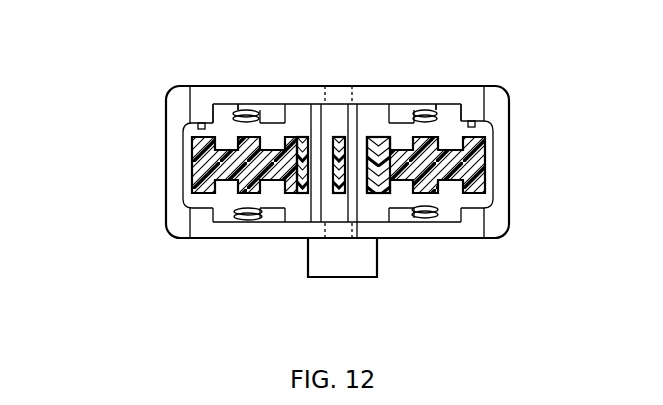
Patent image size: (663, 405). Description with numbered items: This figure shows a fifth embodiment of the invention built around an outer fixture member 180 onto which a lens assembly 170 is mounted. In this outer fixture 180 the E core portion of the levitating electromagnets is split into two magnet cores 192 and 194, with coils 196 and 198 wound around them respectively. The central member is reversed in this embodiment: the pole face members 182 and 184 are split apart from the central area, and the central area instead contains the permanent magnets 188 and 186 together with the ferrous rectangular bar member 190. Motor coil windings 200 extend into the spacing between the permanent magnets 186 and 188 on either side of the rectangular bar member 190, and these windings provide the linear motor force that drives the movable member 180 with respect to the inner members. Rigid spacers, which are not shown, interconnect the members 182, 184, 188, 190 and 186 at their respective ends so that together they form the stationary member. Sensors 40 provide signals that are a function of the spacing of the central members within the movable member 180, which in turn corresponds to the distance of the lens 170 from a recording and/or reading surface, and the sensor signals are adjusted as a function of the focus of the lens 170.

The outer fixture member 180 is at (136, 90).
The lens assembly 170 is at (358, 268).
The sensors 40 is at (197, 126).
The pole face member 182 is at (199, 157).
The pole face member 184 is at (434, 222).
The permanent magnet 186 is at (311, 104).
The permanent magnet 188 is at (366, 195).
The ferrous rectangular bar member 190 is at (321, 222).
The magnet core 192 is at (248, 100).
The magnet core 194 is at (431, 112).
The coil 196 is at (224, 252).
The coil 198 is at (440, 92).
The motor coil windings 200 is at (357, 118).